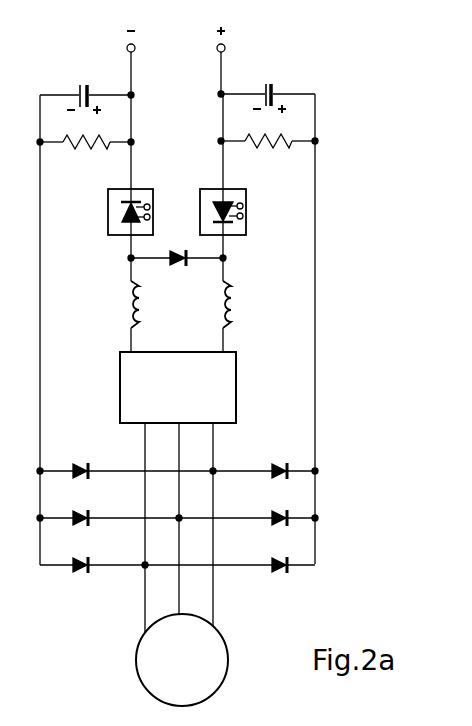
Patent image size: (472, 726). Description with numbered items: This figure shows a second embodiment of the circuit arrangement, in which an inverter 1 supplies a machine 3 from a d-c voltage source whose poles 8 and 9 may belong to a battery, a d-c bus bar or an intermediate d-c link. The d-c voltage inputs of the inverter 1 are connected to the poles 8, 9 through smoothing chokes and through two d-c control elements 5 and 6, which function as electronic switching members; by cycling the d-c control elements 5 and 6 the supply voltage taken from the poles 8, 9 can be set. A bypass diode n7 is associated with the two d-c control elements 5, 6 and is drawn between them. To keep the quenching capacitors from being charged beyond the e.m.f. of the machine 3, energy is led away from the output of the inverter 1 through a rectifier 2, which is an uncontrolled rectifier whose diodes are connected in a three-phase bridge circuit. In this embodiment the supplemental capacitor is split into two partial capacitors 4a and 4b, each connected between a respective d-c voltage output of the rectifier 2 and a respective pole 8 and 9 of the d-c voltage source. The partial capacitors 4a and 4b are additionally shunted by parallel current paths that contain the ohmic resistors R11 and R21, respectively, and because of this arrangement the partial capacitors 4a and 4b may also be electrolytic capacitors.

The inverter 1 is at (186, 398).
The rectifier 2 is at (78, 542).
The machine 3 is at (228, 660).
The partial capacitor 4a is at (77, 92).
The partial capacitor 4b is at (273, 92).
The d-c control element 5 is at (108, 212).
The d-c control element 6 is at (246, 211).
The pole of the d-c voltage source 8 is at (135, 48).
The pole of the d-c voltage source 9 is at (217, 48).
The ohmic resistor R11 is at (88, 148).
The ohmic resistor R21 is at (262, 148).
The bypass diode n7 is at (177, 275).